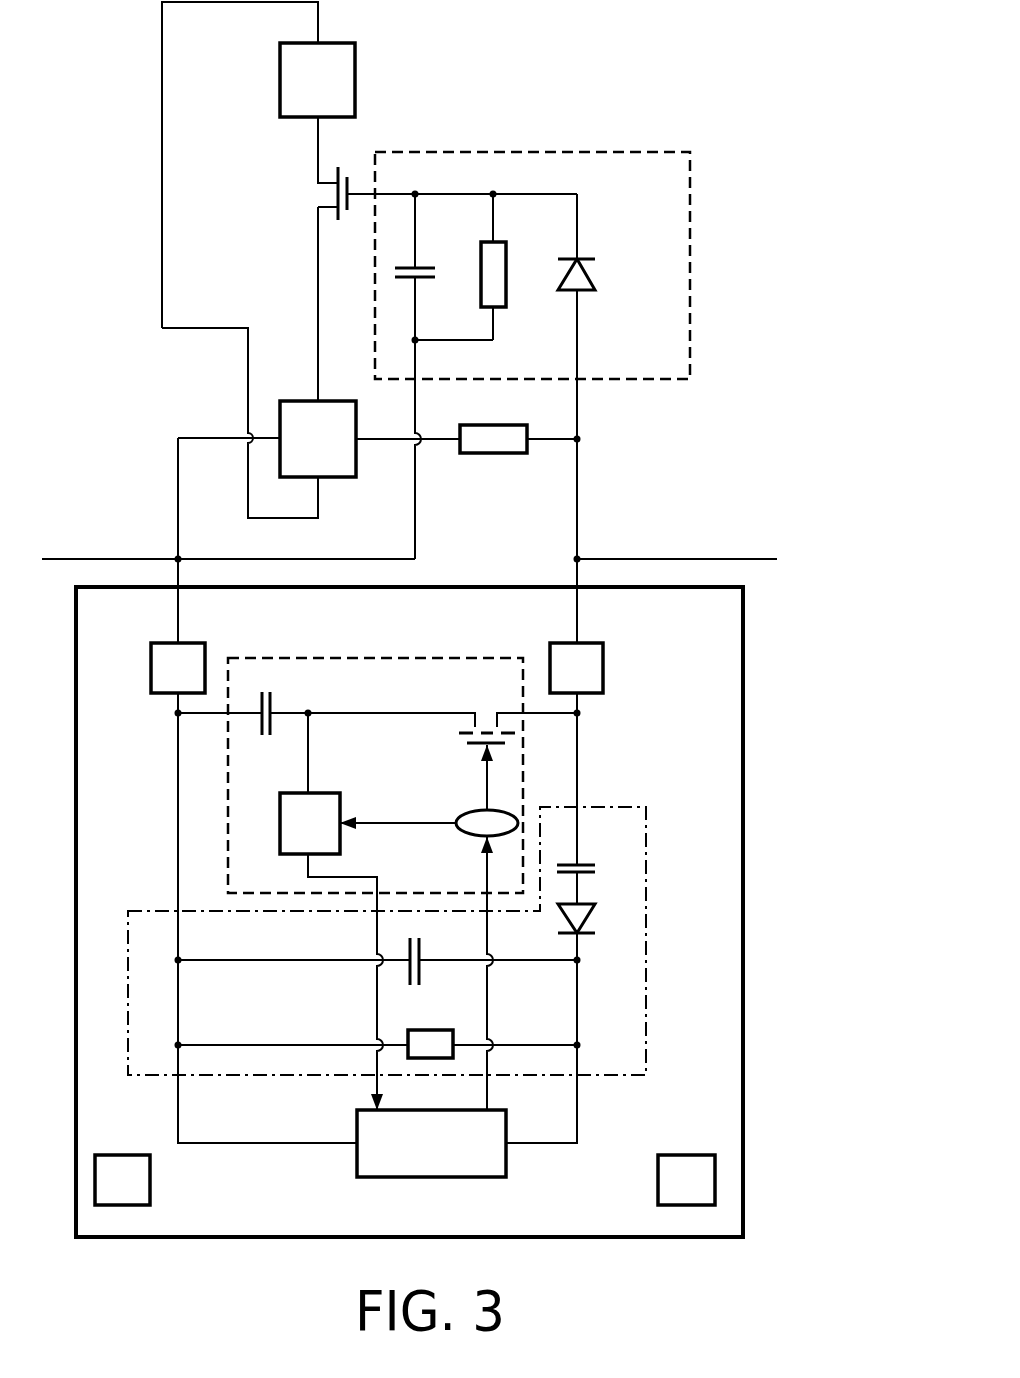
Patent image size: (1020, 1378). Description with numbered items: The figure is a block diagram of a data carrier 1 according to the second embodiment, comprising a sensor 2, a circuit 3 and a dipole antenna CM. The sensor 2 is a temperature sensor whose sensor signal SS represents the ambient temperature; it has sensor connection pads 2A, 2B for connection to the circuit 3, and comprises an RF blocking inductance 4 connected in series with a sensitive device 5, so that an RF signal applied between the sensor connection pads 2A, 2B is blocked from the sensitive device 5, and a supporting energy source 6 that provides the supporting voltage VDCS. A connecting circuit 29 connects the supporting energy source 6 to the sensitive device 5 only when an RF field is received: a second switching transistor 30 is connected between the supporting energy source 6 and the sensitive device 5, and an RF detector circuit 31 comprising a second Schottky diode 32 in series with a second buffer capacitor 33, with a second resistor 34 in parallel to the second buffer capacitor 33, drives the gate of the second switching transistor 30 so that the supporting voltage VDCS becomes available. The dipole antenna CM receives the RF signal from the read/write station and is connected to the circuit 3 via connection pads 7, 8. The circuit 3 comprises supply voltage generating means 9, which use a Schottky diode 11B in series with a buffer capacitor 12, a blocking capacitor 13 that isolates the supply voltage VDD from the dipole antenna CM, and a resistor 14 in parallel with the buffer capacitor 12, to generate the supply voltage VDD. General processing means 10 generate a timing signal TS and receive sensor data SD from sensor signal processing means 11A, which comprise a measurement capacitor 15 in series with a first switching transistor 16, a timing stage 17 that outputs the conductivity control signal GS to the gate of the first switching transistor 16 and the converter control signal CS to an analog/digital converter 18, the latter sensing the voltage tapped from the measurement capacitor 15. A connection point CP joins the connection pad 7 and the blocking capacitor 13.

The data carrier 1 is at (637, 63).
The sensor 2 is at (503, 93).
The circuit 3 is at (770, 897).
The RF blocking inductance 4 is at (488, 442).
The sensitive device 5 is at (333, 457).
The supporting energy source 6 is at (323, 80).
The connection pad 7 is at (605, 663).
The connection pad 8 is at (180, 660).
The supply voltage generating means 9 is at (650, 1007).
The general processing means 10 is at (393, 1145).
The sensor signal processing means 11A is at (223, 782).
The Schottky diode 11B is at (583, 913).
The buffer capacitor 12 is at (425, 950).
The blocking capacitor 13 is at (587, 863).
The resistor 14 is at (430, 1045).
The measurement capacitor 15 is at (272, 700).
The first switching transistor 16 is at (485, 717).
The timing stage 17 is at (478, 823).
The analog/digital converter 18 is at (298, 813).
The connecting circuit 29 is at (743, 288).
The second switching transistor 30 is at (348, 162).
The RF detector circuit 31 is at (697, 207).
The second Schottky diode 32 is at (583, 287).
The second buffer capacitor 33 is at (425, 268).
The second resistor 34 is at (493, 277).
The supporting voltage VDCS is at (315, 150).
The sensor signal SS is at (177, 500).
The sensor connection pad 2A is at (176, 557).
The sensor connection pad 2B is at (579, 557).
The dipole antenna CM is at (738, 552).
The connection point CP is at (580, 713).
The converter control signal CS is at (375, 820).
The conductivity control signal GS is at (485, 792).
The sensor data SD is at (373, 1002).
The timing signal TS is at (487, 1018).
The supply voltage VDD is at (578, 1102).